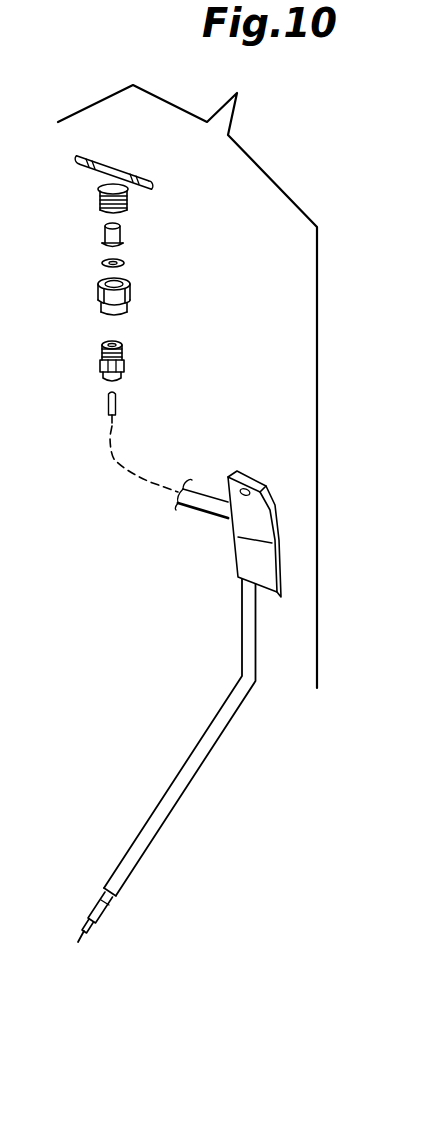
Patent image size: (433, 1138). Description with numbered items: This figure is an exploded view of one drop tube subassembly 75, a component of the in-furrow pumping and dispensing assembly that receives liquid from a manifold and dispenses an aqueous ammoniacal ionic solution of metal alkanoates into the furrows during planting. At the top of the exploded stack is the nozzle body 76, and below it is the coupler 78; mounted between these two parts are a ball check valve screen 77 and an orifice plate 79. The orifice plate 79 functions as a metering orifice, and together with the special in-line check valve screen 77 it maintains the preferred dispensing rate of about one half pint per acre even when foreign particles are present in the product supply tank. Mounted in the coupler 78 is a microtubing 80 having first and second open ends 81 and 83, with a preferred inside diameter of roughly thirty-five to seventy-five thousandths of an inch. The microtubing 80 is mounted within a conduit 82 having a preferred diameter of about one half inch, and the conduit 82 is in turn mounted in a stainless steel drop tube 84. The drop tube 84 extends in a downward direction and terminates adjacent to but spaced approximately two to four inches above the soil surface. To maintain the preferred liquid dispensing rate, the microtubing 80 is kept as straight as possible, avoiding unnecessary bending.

The drop tube subassembly 75 is at (68, 333).
The nozzle body 76 is at (110, 178).
The ball check valve screen 77 is at (123, 233).
The coupler 78 is at (123, 350).
The orifice plate 79 is at (125, 263).
The microtubing 80 is at (93, 928).
The first open end 81 is at (75, 944).
The conduit 82 is at (105, 905).
The second open end 83 is at (116, 393).
The stainless steel drop tube 84 is at (228, 718).